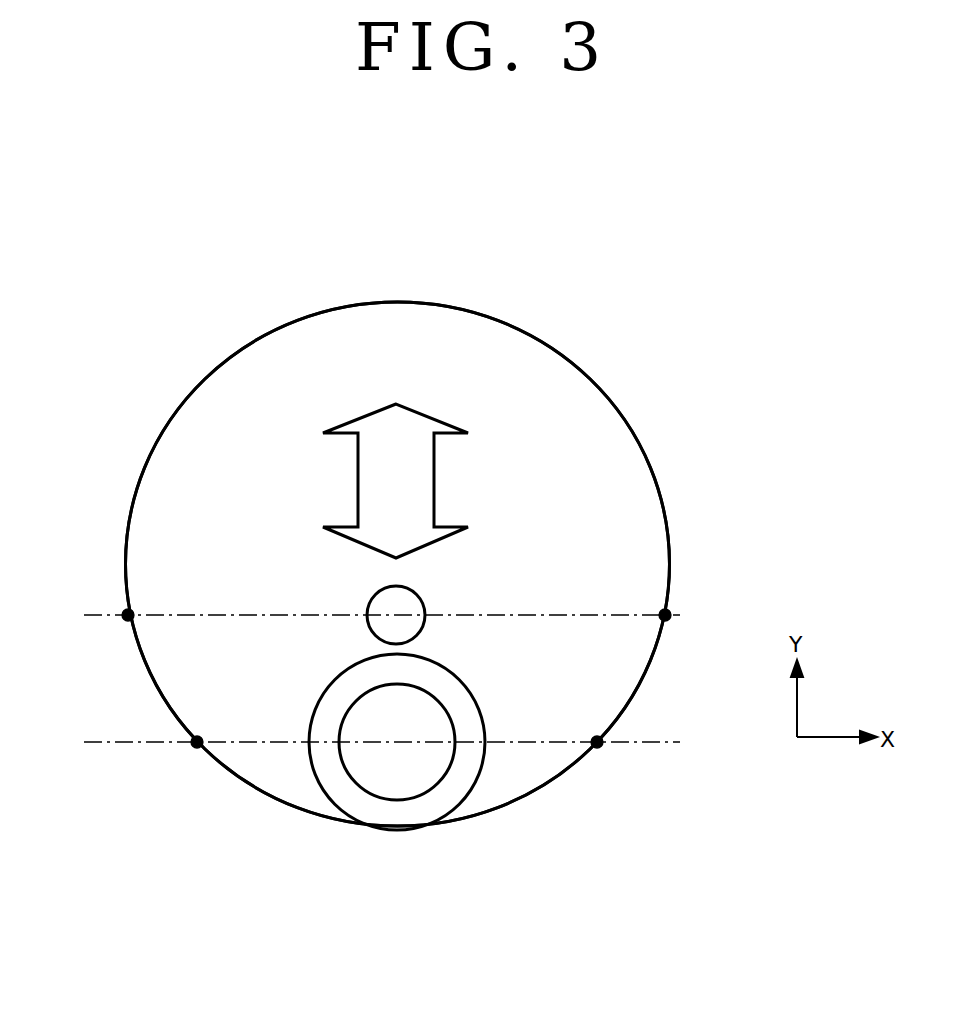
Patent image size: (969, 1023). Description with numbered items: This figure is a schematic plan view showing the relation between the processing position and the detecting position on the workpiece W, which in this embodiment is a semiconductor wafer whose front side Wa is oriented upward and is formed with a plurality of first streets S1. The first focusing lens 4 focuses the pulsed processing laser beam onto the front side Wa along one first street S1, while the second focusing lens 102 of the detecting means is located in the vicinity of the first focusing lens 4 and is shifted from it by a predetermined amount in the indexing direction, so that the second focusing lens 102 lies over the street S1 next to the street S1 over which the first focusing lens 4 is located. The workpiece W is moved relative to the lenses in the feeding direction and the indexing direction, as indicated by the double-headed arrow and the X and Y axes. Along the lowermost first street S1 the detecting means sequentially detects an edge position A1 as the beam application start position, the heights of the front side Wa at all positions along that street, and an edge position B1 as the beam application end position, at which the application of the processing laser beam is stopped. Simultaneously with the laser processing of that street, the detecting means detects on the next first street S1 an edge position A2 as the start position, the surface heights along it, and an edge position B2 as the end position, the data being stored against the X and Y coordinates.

The workpiece W is at (638, 440).
The front side of the workpiece Wa is at (573, 367).
The second focusing lens 102 is at (417, 593).
The first focusing lens 4 is at (395, 785).
The first street S1 is at (366, 680).
The edge position A1 is at (197, 745).
The edge position A2 is at (128, 618).
The edge position B1 is at (597, 745).
The edge position B2 is at (665, 618).